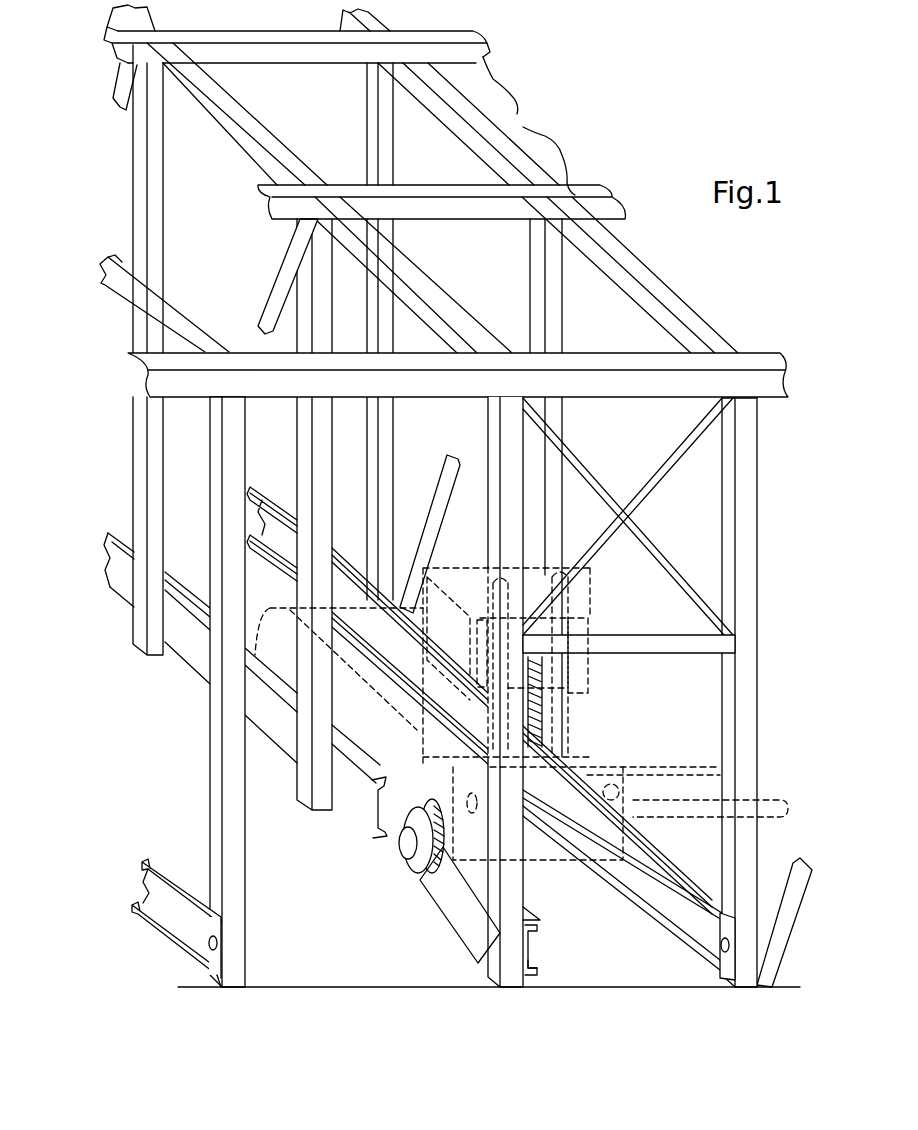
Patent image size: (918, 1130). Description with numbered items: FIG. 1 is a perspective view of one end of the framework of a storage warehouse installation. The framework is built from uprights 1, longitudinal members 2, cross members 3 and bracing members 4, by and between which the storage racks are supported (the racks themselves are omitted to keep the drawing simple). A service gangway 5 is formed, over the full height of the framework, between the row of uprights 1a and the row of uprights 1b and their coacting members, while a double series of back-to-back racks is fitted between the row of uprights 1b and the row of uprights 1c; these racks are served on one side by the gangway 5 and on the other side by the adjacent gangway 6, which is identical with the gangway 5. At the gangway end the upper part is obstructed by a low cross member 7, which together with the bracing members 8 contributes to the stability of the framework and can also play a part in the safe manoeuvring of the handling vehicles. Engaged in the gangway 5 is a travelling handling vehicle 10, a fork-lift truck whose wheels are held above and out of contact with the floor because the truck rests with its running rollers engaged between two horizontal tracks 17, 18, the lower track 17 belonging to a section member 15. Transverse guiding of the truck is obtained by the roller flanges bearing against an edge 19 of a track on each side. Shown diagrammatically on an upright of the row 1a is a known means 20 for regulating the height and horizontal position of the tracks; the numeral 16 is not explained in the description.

The uprights 1 is at (376, 300).
The row of uprights 1a is at (748, 608).
The row of uprights 1b is at (507, 925).
The row of uprights 1c is at (238, 864).
The longitudinal members 2 is at (183, 314).
The cross members 3 is at (741, 353).
The bracing members 4 is at (278, 268).
The service gangway 5 is at (489, 960).
The adjacent gangway 6 is at (176, 923).
The low cross member 7 is at (672, 635).
The bracing members 8 is at (645, 560).
The travelling handling vehicle 10 is at (409, 690).
The section member 15 is at (364, 808).
The guide rail 16 is at (703, 900).
The lower track 17 is at (535, 973).
The upper track 18 is at (536, 913).
The edge of track 19 is at (545, 940).
The means for regulating the height and horizontal position of the tracks 20 is at (720, 945).